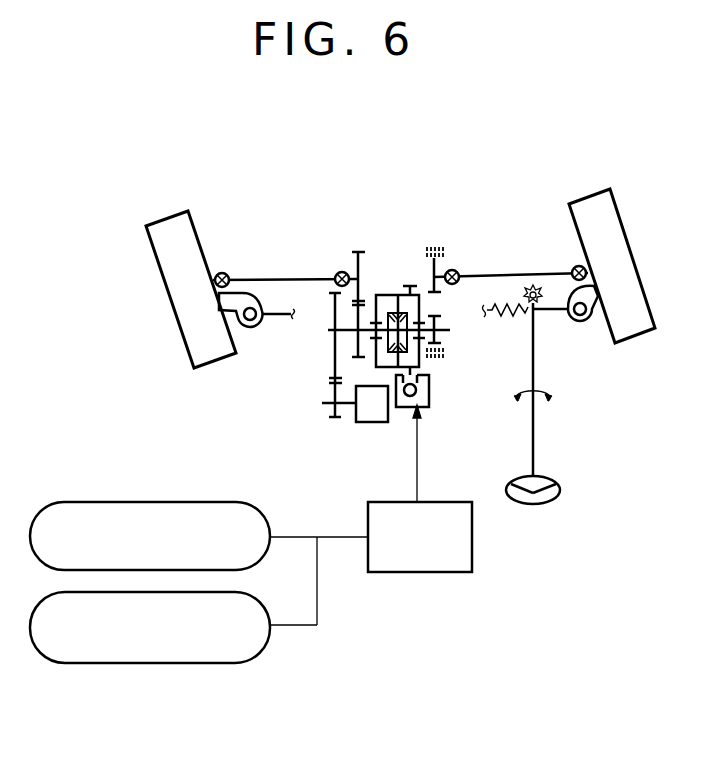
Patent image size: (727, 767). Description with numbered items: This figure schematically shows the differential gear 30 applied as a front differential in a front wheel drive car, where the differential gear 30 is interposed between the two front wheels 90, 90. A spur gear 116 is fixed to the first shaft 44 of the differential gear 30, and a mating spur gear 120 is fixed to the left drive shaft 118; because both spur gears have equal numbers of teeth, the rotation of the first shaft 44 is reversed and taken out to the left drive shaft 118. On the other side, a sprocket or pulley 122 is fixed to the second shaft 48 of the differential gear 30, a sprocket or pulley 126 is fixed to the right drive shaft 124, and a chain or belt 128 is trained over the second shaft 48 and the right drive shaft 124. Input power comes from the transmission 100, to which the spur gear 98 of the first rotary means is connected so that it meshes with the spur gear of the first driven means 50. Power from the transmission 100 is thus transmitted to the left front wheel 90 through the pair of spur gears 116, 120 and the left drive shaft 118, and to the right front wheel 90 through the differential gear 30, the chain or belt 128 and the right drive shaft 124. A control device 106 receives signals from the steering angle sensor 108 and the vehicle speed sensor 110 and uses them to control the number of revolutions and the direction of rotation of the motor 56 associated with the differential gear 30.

The front wheel 90 is at (163, 221).
The left drive shaft 118 is at (268, 278).
The spur gear 120 is at (353, 268).
The spur gear 116 is at (353, 343).
The first shaft 44 is at (336, 318).
The first driven means 50 is at (334, 363).
The spur gear 98 is at (330, 408).
The transmission 100 is at (362, 424).
The differential gear 30 is at (381, 292).
The motor 56 is at (400, 408).
The sprocket or pulley 122 is at (440, 319).
The second shaft 48 is at (443, 334).
The chain or belt 128 is at (438, 247).
The sprocket or pulley 126 is at (442, 268).
The right drive shaft 124 is at (544, 270).
The control device 106 is at (443, 573).
The steering angle sensor 108 is at (81, 503).
The vehicle speed sensor 110 is at (70, 657).